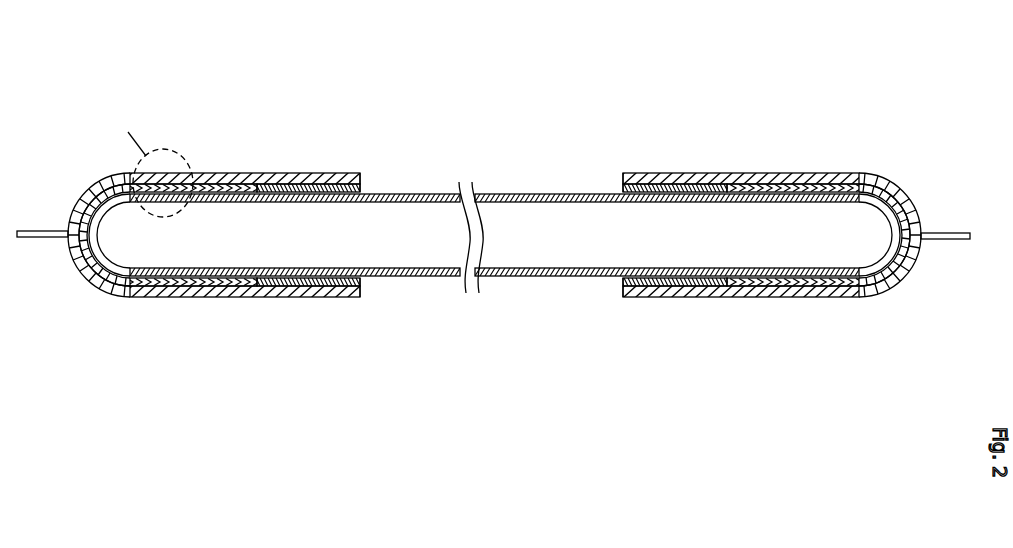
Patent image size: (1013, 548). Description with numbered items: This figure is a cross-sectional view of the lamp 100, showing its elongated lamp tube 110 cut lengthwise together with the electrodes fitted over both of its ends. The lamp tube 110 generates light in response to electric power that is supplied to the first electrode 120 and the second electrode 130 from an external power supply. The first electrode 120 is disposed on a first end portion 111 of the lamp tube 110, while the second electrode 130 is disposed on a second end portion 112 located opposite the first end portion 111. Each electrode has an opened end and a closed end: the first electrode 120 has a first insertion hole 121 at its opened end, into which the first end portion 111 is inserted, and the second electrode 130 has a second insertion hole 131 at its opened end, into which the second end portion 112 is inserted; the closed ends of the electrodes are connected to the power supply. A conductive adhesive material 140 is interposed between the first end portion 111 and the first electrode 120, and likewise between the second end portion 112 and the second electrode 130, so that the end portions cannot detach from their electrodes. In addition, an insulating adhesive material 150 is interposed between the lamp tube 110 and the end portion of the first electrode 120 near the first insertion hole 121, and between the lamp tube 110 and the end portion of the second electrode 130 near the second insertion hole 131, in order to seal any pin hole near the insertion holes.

The lamp 100 is at (491, 55).
The lamp tube 110 is at (532, 196).
The first end portion 111 is at (192, 297).
The second end portion 112 is at (831, 182).
The first electrode 120 is at (84, 185).
The first insertion hole 121 is at (362, 285).
The second electrode 130 is at (882, 173).
The second insertion hole 131 is at (620, 279).
The conductive adhesive material 140 is at (240, 286).
The insulating adhesive material 150 is at (322, 286).